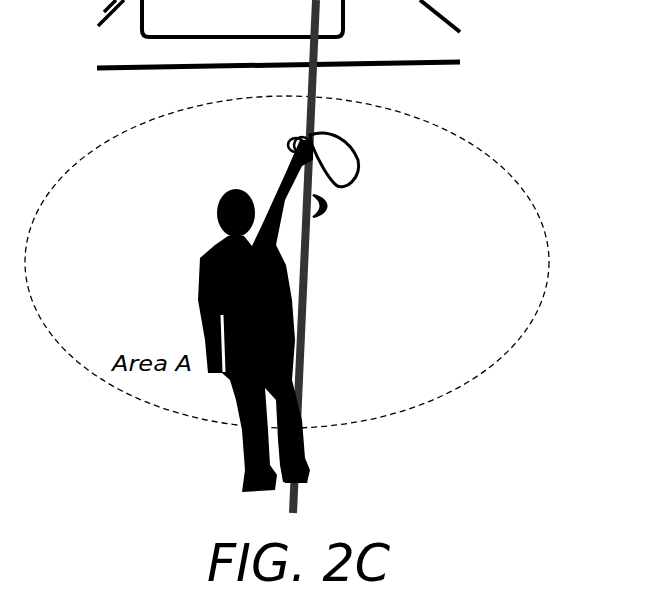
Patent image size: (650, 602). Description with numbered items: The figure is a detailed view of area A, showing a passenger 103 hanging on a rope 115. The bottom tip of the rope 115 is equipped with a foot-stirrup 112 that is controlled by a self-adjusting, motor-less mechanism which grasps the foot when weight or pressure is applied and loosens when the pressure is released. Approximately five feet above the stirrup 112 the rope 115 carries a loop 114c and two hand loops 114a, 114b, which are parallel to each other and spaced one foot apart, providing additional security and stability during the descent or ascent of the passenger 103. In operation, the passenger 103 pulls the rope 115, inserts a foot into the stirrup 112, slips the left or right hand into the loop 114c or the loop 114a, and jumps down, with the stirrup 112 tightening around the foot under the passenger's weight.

The passenger 103 is at (207, 330).
The foot-stirrup 112 is at (305, 462).
The hand loop 114a is at (327, 206).
The hand loop 114b is at (289, 147).
The loop 114c is at (358, 160).
The rope 115 is at (305, 284).